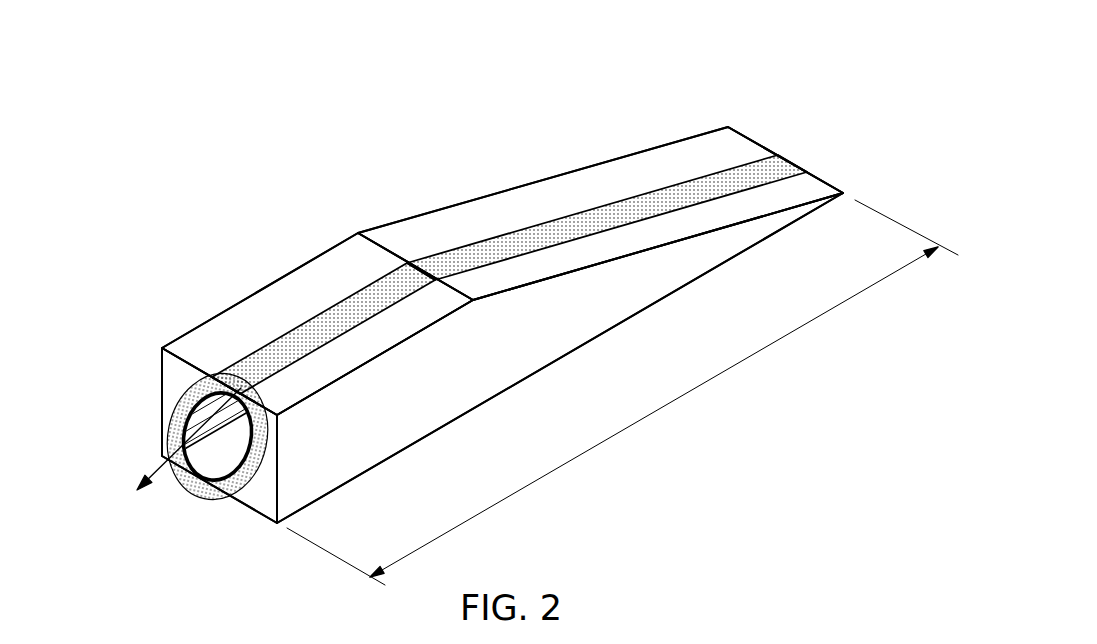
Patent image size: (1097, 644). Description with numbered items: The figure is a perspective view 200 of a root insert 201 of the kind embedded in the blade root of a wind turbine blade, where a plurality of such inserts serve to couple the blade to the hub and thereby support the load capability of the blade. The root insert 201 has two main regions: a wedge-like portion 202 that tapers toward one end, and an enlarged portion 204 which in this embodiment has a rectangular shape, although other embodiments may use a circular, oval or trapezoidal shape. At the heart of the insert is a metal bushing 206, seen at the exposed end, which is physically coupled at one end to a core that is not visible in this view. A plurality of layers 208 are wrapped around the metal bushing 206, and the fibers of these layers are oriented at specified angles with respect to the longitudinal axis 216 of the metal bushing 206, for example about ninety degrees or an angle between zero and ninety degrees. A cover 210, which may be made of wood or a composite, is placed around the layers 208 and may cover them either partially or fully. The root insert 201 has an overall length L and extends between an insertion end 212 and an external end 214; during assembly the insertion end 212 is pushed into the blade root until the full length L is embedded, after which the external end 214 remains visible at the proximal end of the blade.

The perspective view 200 is at (178, 73).
The root insert 201 is at (507, 360).
The wedge-like portion 202 is at (727, 135).
The enlarged portion 204 is at (381, 238).
The metal bushing 206 is at (233, 470).
The layers 208 is at (317, 336).
The cover 210 is at (593, 305).
The insertion end 212 is at (748, 153).
The external end 214 is at (172, 378).
The longitudinal axis 216 is at (157, 473).